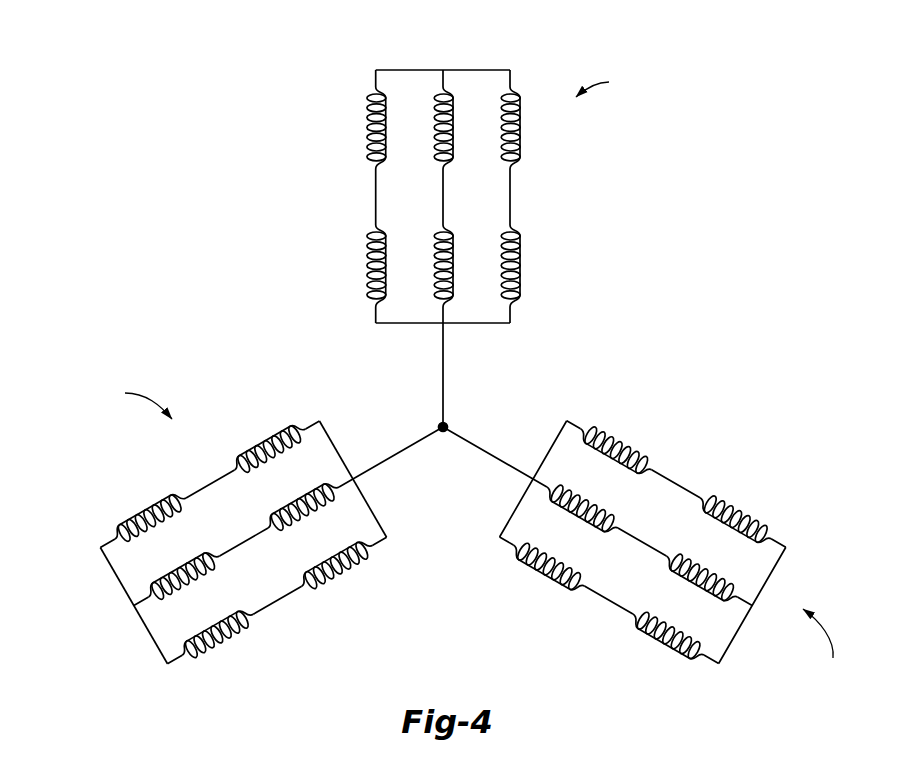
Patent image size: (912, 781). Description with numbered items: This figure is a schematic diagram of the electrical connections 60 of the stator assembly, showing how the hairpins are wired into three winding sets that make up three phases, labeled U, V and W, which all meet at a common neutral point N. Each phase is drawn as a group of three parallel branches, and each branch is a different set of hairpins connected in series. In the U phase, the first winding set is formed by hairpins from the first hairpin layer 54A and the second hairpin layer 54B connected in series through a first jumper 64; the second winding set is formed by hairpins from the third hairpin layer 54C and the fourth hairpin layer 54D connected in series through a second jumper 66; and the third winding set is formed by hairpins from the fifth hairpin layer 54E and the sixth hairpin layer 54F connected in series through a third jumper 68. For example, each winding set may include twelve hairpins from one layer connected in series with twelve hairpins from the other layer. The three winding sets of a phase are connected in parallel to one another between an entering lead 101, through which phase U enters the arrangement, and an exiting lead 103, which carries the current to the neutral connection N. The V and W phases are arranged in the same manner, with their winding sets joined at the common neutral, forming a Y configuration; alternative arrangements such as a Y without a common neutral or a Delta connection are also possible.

The first hairpin layer 54A is at (139, 516).
The second hairpin layer 54B is at (264, 444).
The third hairpin layer 54C is at (174, 574).
The fourth hairpin layer 54D is at (296, 503).
The fifth hairpin layer 54E is at (207, 632).
The sixth hairpin layer 54F is at (347, 567).
The electrical connections 60 is at (432, 370).
The first jumper 64 is at (202, 477).
The second jumper 66 is at (235, 535).
The third jumper 68 is at (270, 594).
The entering lead 101 is at (129, 605).
The exiting lead 103 is at (398, 431).